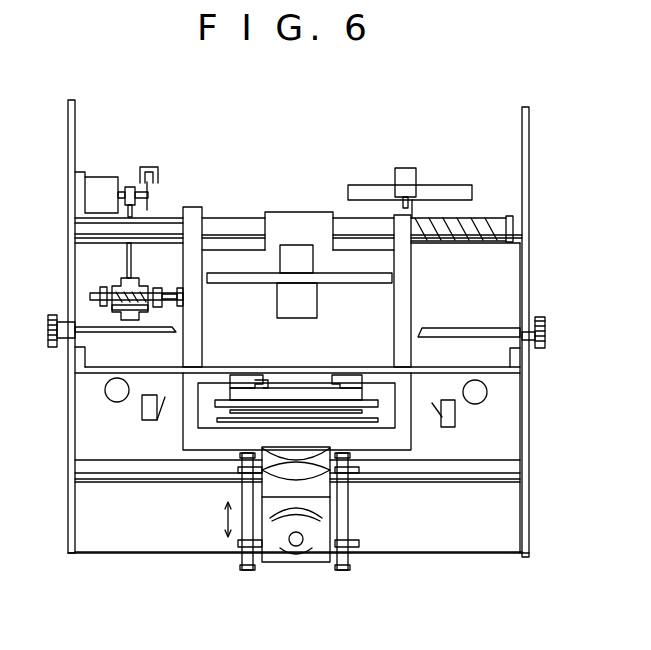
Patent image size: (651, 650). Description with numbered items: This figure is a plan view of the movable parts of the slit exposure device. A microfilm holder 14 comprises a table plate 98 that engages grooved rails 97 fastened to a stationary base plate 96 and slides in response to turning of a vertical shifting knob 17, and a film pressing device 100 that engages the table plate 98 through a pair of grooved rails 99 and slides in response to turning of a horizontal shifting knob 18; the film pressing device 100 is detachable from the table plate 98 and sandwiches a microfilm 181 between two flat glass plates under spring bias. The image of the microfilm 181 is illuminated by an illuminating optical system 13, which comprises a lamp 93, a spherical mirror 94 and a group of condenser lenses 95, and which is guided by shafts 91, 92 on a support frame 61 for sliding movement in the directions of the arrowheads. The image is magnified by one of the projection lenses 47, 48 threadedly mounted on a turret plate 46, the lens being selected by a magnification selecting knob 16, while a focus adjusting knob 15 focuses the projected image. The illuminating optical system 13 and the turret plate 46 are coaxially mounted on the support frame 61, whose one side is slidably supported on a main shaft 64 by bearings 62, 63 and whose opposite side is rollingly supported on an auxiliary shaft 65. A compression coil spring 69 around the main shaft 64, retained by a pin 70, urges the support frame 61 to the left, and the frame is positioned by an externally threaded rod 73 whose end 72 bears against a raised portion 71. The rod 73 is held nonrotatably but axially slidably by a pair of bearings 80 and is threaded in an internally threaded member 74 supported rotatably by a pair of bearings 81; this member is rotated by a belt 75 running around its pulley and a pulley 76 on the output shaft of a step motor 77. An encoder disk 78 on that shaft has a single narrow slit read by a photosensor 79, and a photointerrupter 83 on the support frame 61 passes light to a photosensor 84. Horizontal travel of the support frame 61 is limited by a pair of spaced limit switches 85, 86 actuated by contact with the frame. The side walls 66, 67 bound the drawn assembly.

The illuminating optical system 13 is at (368, 570).
The microfilm holder 14 is at (210, 417).
The focus adjusting knob 15 is at (542, 322).
The magnification selecting knob 16 is at (48, 332).
The vertical shifting knob 17 is at (478, 403).
The horizontal shifting knob 18 is at (118, 402).
The turret plate 46 is at (250, 283).
The projection lens 47 is at (298, 252).
The projection lens 48 is at (317, 300).
The support frame 61 is at (411, 294).
The bearing 62 is at (404, 232).
The bearing 63 is at (200, 209).
The main shaft 64 is at (88, 238).
The auxiliary shaft 65 is at (468, 482).
The left side wall 66 is at (68, 130).
The right side wall 67 is at (530, 137).
The compression coil spring 69 is at (487, 219).
The pin 70 is at (509, 243).
The raised portion 71 is at (180, 289).
The end of externally threaded rod 72 is at (163, 299).
The externally threaded rod 73 is at (92, 296).
The internally threaded member 74 is at (128, 320).
The belt 75 is at (131, 253).
The pulley 76 is at (130, 186).
The step motor 77 is at (104, 178).
The encoder disk 78 is at (149, 192).
The photosensor 79 is at (150, 167).
The bearing 80 is at (104, 287).
The bearing 81 is at (112, 310).
The photointerrupter 83 is at (453, 186).
The photosensor 84 is at (405, 168).
The limit switch 85 is at (449, 427).
The limit switch 86 is at (150, 420).
The shaft 91 is at (245, 488).
The shaft 92 is at (348, 504).
The lamp 93 is at (299, 545).
The spherical mirror 94 is at (287, 516).
The condenser lens group 95 is at (286, 476).
The stationary base plate 96 is at (458, 338).
The grooved rail 97 is at (245, 378).
The table plate 98 is at (266, 380).
The grooved rail 99 is at (300, 392).
The film pressing device 100 is at (347, 413).
The microfilm 181 is at (375, 422).